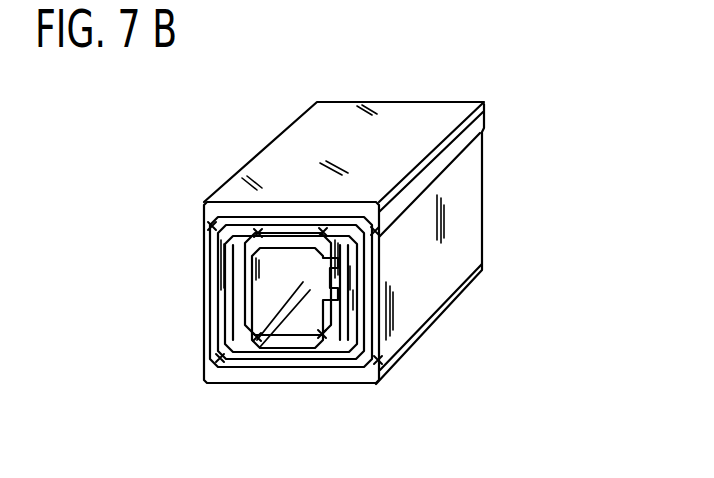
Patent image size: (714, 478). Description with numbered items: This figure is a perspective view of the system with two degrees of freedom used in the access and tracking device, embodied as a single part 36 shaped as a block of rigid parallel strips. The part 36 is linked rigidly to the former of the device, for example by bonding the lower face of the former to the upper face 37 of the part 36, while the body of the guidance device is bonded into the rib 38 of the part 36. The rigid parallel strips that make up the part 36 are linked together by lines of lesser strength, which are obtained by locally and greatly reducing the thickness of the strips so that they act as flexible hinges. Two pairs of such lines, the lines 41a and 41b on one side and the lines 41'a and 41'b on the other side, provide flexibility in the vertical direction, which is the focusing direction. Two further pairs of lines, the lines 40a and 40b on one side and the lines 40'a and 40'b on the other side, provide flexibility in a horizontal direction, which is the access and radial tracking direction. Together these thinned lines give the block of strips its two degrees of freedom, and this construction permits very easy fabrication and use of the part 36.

The single part 36 is at (478, 163).
The upper face 37 is at (441, 103).
The rib 38 is at (332, 290).
The line of lesser strength 40a is at (377, 231).
The line of lesser strength 40b is at (385, 361).
The line of lesser strength 40'a is at (157, 242).
The line of lesser strength 40'b is at (157, 350).
The line of lesser strength 41a is at (259, 232).
The line of lesser strength 41b is at (323, 230).
The line of lesser strength 41'a is at (216, 389).
The line of lesser strength 41'b is at (350, 387).